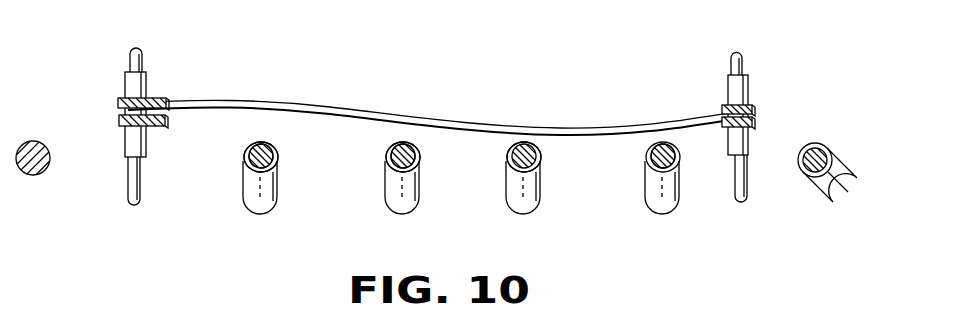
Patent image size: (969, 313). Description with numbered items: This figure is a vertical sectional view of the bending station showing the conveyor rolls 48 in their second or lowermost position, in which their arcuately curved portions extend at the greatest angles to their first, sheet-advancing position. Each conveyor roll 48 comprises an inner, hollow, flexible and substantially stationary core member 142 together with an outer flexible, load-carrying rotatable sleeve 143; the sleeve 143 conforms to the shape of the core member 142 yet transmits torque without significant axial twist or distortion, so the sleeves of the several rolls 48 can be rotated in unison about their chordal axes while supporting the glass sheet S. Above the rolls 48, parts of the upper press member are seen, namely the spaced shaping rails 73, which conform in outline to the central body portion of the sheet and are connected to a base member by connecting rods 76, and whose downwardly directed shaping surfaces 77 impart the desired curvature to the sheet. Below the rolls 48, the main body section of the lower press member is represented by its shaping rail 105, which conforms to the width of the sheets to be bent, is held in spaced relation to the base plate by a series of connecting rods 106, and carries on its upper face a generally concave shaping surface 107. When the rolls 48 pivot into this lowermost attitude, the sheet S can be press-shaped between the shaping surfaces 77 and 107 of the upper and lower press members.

The flexible strip S is at (428, 120).
The conveyor roll 48 is at (370, 193).
The inner core member 142 is at (262, 148).
The outer sleeve 143 is at (387, 150).
The shaping rail 73 is at (453, 124).
The connecting rod 76 is at (143, 57).
The shaping surface 77 is at (155, 128).
The shaping rail 105 is at (120, 128).
The connecting rod 106 is at (142, 203).
The shaping surface 107 is at (148, 98).